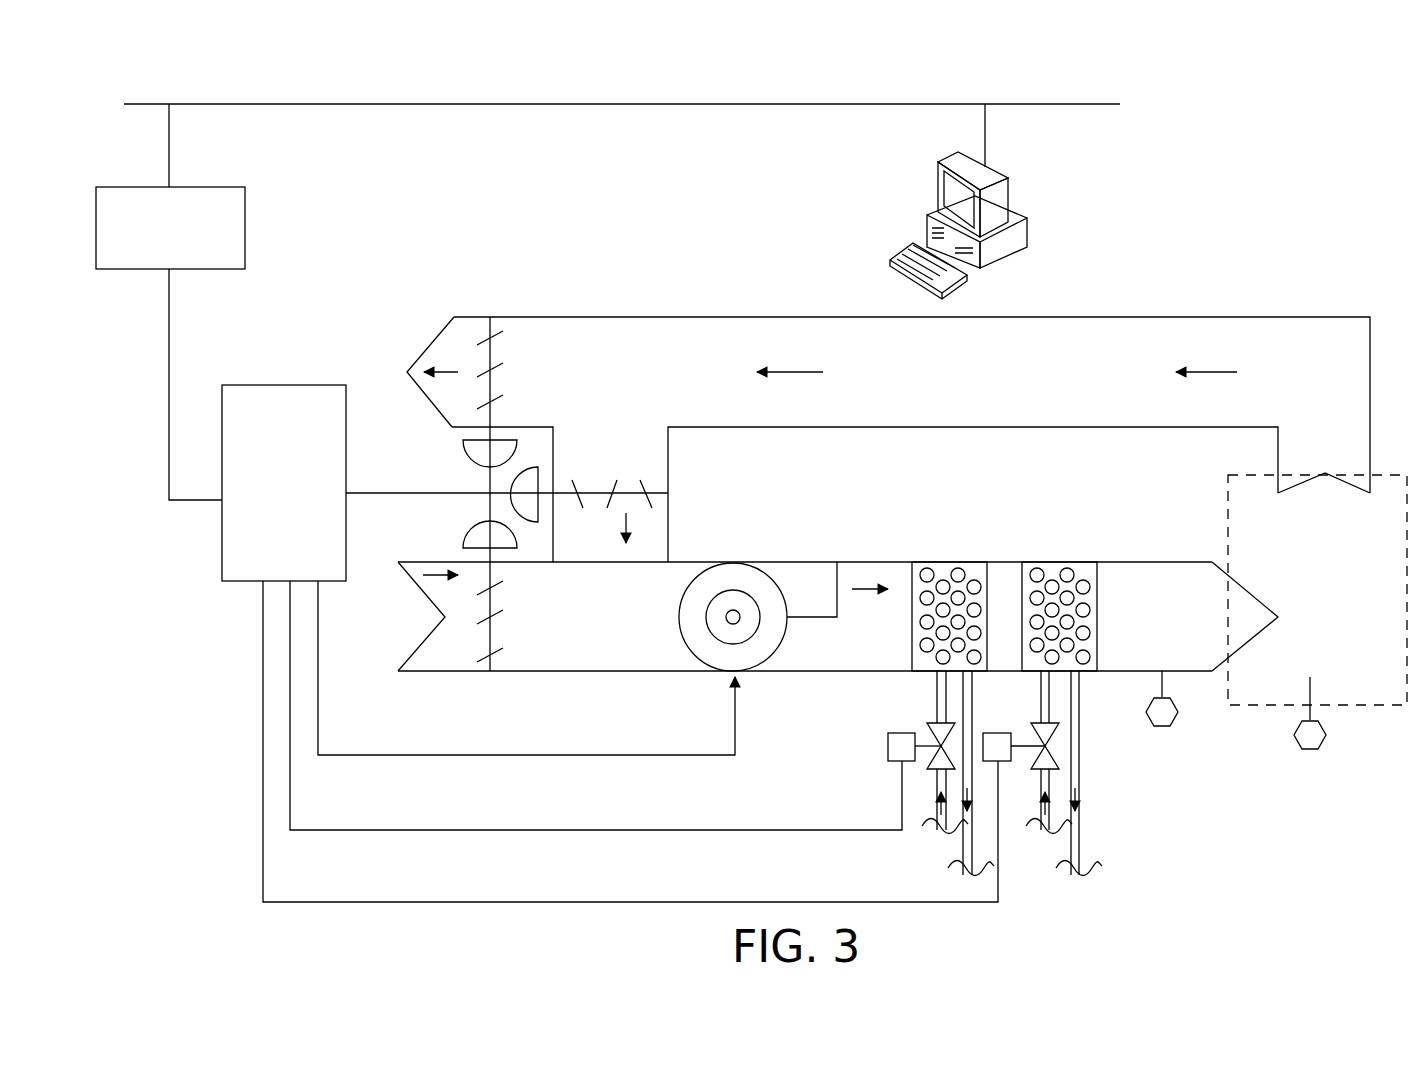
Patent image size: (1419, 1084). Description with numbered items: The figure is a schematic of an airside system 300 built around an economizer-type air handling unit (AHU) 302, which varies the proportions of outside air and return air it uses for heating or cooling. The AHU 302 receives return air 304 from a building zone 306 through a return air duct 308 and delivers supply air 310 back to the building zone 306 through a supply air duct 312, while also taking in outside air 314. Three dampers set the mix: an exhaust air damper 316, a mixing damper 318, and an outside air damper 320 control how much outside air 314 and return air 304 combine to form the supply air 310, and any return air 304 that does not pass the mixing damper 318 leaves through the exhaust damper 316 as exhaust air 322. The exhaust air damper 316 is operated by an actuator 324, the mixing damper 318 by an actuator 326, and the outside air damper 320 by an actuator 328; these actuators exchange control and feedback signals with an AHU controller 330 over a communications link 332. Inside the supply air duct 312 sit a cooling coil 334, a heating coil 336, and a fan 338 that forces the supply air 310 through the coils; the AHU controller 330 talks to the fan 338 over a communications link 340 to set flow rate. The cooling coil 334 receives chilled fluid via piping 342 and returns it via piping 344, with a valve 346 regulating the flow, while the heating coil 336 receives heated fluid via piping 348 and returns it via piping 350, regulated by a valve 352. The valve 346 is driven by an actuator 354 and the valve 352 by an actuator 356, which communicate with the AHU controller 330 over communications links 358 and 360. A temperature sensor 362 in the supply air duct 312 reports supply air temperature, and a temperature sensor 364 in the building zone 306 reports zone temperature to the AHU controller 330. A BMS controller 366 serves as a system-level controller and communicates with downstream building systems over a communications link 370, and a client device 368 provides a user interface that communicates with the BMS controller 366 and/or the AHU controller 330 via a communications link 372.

The airside system 300 is at (530, 74).
The air handling unit 302 is at (1210, 206).
The return air 304 is at (1332, 395).
The building zone 306 is at (1382, 690).
The return air duct 308 is at (1230, 312).
The supply air 310 is at (1184, 570).
The supply air duct 312 is at (1132, 562).
The outside air 314 is at (386, 672).
The exhaust air damper 316 is at (498, 358).
The mixing damper 318 is at (668, 482).
The outside air damper 320 is at (498, 630).
The exhaust air 322 is at (382, 330).
The actuator 324 is at (515, 447).
The actuator 326 is at (537, 477).
The actuator 328 is at (465, 543).
The AHU controller 330 is at (258, 385).
The communications link 332 is at (396, 493).
The cooling coil 334 is at (945, 568).
The heating coil 336 is at (1050, 567).
The fan 338 is at (779, 636).
The communications link 340 is at (545, 755).
The piping 342 is at (937, 695).
The piping 344 is at (963, 858).
The valve 346 is at (928, 725).
The piping 348 is at (1041, 695).
The piping 350 is at (1079, 840).
The valve 352 is at (1035, 725).
The actuator 354 is at (889, 758).
The actuator 356 is at (1005, 760).
The communications link 358 is at (640, 830).
The communications link 360 is at (695, 902).
The temperature sensor 362 is at (1162, 728).
The temperature sensor 364 is at (1310, 751).
The BMS controller 366 is at (233, 227).
The client device 368 is at (1005, 193).
The communications link 370 is at (169, 430).
The communications link 372 is at (283, 104).